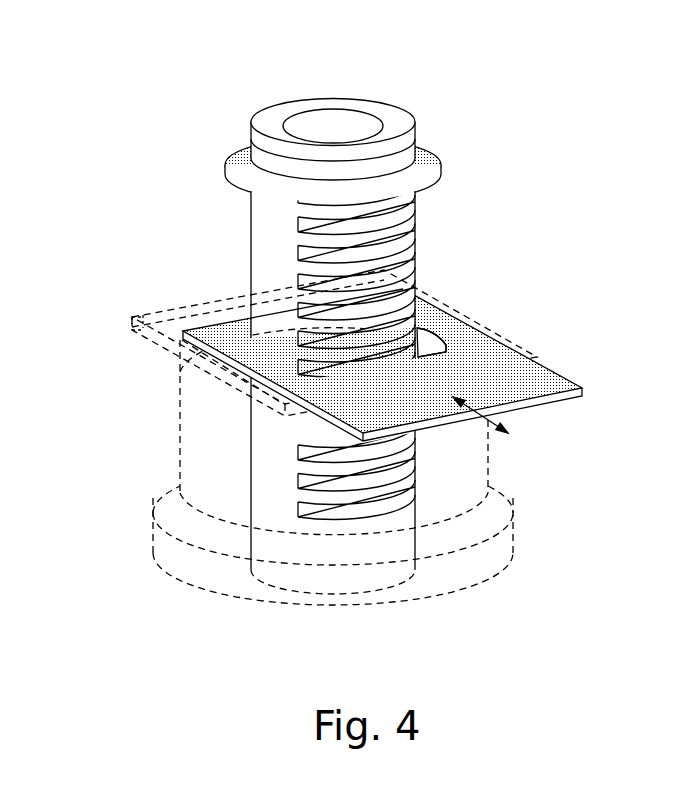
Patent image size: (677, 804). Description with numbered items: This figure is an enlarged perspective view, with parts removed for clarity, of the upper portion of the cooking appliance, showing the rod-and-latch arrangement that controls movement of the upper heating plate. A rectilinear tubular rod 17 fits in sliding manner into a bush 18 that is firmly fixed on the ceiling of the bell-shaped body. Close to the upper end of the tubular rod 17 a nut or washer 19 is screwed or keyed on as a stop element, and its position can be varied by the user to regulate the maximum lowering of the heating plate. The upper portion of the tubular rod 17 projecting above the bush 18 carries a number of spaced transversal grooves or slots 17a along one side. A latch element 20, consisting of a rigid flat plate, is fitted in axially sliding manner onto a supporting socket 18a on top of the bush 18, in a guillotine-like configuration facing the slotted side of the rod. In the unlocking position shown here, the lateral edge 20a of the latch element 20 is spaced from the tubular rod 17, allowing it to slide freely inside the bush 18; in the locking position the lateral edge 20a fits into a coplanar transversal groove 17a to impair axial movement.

The tubular rod 17 is at (405, 143).
The transversal grooves or slots 17a is at (393, 298).
The bush 18 is at (207, 468).
The supporting socket 18a is at (163, 315).
The nut or washer 19 is at (239, 159).
The latch element 20 is at (478, 368).
The lateral edge 20a is at (360, 367).